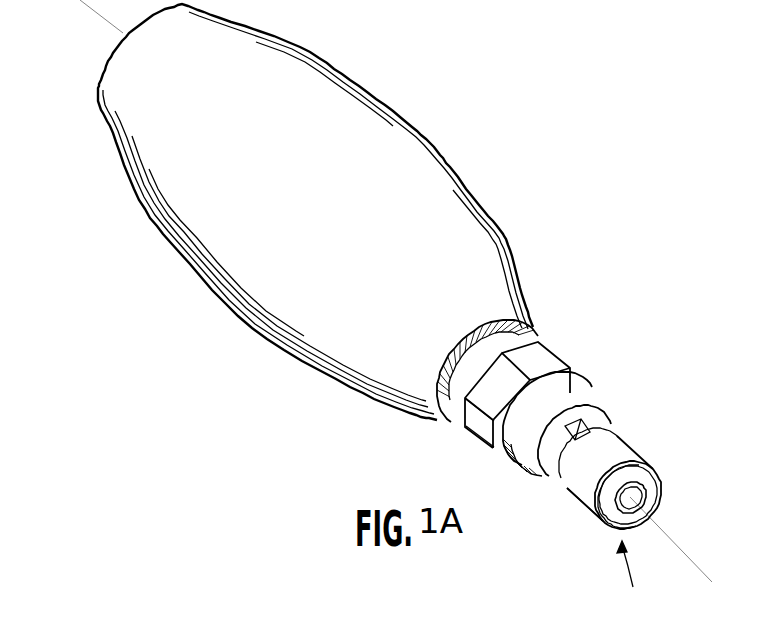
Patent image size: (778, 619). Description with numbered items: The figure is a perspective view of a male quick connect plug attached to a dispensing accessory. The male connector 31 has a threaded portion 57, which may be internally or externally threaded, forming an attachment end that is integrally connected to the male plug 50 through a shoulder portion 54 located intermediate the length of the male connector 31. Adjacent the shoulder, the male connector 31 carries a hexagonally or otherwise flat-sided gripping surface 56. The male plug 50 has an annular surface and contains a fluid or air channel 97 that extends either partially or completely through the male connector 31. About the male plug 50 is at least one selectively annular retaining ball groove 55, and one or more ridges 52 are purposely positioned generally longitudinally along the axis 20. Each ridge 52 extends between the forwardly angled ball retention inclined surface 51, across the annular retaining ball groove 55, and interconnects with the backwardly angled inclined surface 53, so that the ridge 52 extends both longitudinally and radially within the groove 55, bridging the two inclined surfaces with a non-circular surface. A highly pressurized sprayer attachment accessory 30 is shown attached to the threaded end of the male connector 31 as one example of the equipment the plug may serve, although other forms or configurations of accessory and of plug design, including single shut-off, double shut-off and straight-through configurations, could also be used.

The axis 20 is at (675, 542).
The sprayer attachment accessory 30 is at (443, 228).
The male connector 31 is at (627, 577).
The male plug 50 is at (610, 455).
The forwardly angled ball retention inclined surface 51 is at (560, 488).
The ridge 52 is at (598, 413).
The backwardly angled inclined surface 53 is at (525, 430).
The shoulder portion 54 is at (498, 432).
The annular retaining ball groove 55 is at (553, 468).
The gripping surface 56 is at (542, 361).
The threaded portion 57 is at (502, 343).
The fluid or air channel 97 is at (653, 503).